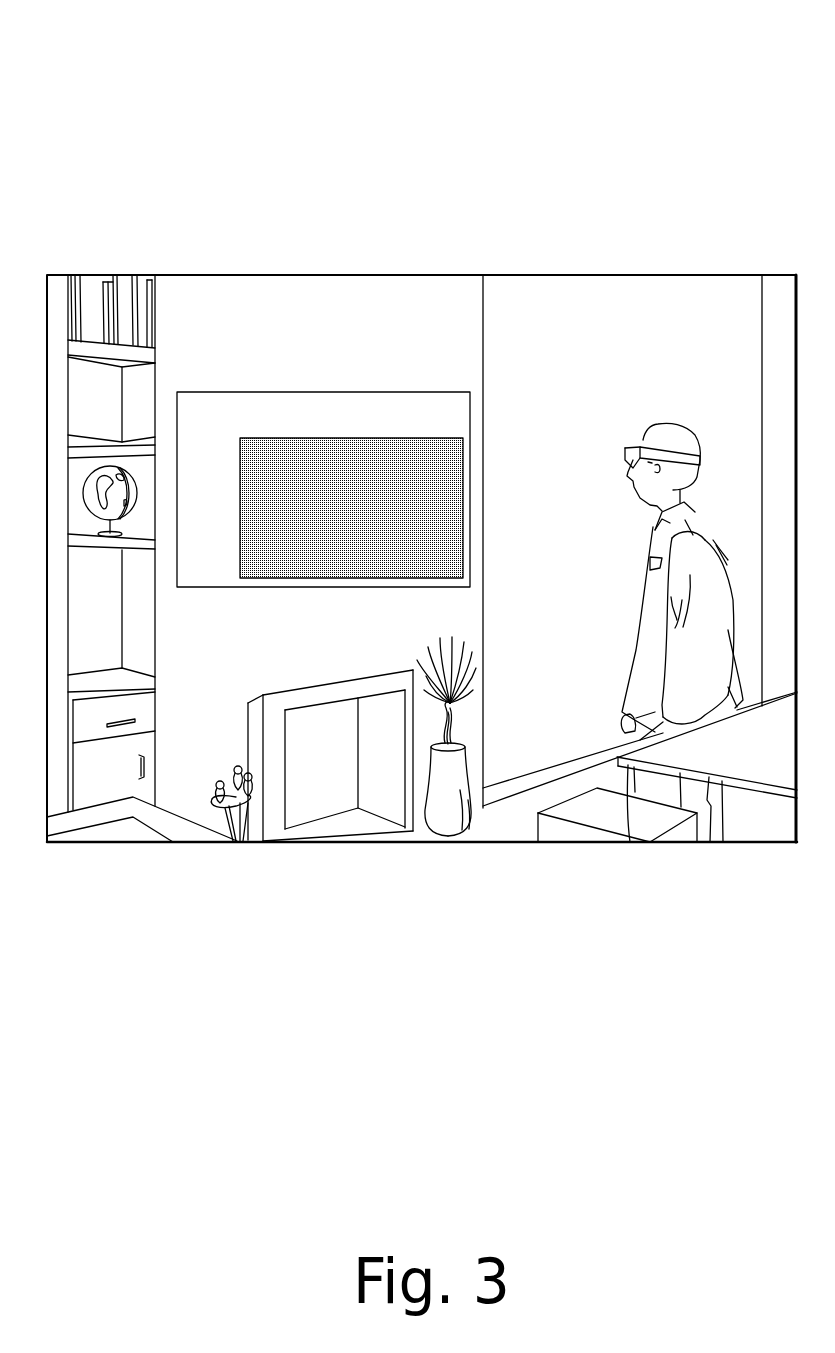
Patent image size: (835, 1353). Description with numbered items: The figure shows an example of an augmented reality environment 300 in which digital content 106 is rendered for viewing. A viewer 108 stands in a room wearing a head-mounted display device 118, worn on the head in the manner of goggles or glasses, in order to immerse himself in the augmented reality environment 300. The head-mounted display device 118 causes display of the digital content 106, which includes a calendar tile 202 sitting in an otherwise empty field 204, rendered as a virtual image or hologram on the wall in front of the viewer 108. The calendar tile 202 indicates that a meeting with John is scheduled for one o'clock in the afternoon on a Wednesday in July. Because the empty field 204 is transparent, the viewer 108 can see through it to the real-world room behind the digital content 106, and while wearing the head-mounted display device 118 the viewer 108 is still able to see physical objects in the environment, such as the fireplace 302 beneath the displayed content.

The augmented reality environment 300 is at (99, 38).
The digital content 106 is at (354, 462).
The empty field 204 is at (262, 412).
The calendar tile 202 is at (445, 483).
The head-mounted display device 118 is at (627, 450).
The viewer 108 is at (665, 425).
The fireplace 302 is at (330, 687).